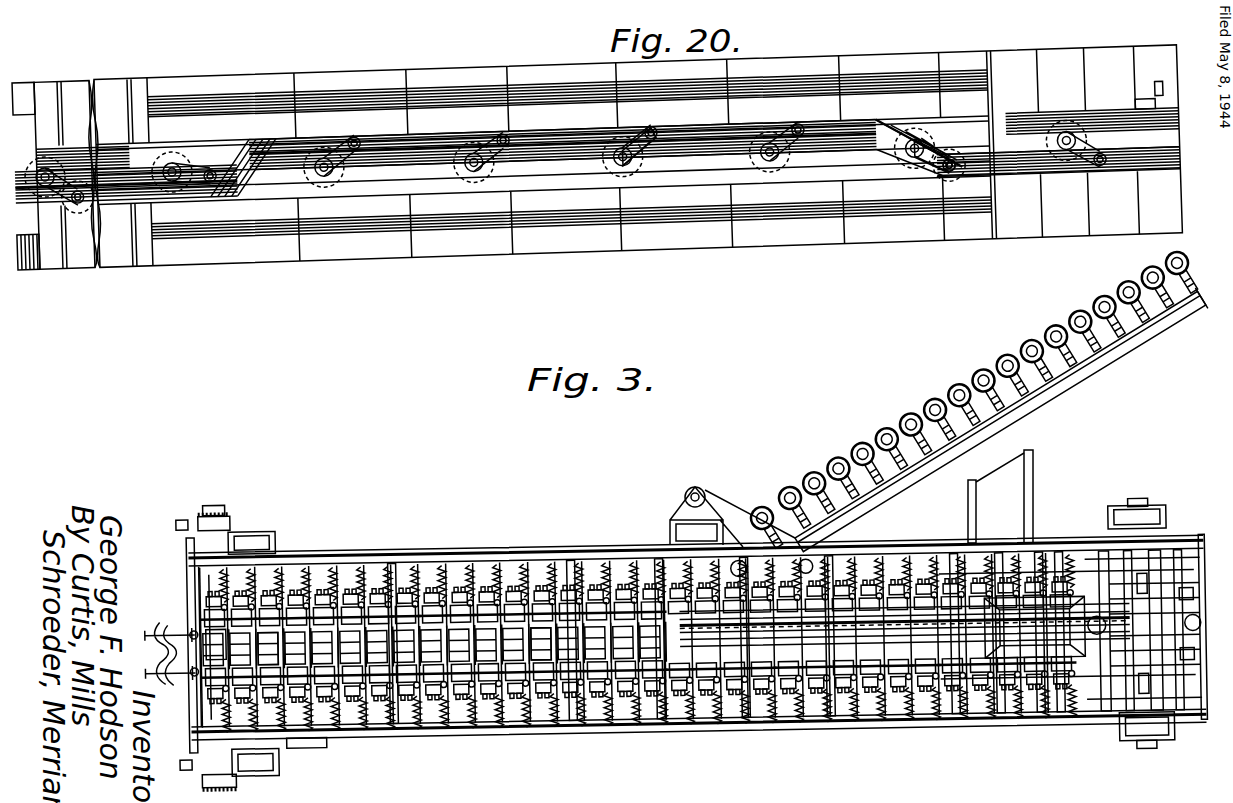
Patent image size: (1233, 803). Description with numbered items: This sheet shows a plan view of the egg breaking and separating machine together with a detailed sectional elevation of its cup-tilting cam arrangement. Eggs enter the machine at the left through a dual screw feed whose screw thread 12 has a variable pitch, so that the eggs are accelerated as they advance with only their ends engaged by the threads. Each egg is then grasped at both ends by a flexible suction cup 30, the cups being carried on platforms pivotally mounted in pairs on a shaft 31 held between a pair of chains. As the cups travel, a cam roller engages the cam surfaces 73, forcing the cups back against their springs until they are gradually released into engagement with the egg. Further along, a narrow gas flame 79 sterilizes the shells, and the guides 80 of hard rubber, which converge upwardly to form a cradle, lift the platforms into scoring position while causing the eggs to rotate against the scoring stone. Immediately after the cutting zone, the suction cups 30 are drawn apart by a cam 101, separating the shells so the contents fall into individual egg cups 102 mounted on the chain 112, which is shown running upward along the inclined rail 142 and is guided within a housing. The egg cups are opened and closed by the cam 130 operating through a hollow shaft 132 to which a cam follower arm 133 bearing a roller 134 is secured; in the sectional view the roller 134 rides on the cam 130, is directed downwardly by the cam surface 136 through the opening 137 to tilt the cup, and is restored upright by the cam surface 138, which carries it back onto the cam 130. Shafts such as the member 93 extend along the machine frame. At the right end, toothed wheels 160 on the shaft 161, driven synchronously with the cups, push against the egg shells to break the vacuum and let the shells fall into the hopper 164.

In FIG. 20, the cam surface 138 is at (146, 162).
In FIG. 20, the cam follower arm 133 is at (783, 138).
In FIG. 20, the roller 134 is at (819, 142).
In FIG. 20, the opening 137 is at (919, 137).
In FIG. 20, the cam surface 136 is at (1016, 174).
In FIG. 20, the hollow shaft 132 is at (946, 175).
In FIG. 20, the cam 130 is at (1088, 123).
In FIG. 20, the guide rail 142 is at (572, 232).
In FIG. 3, the guide rail 142 is at (1000, 421).
In FIG. 3, the guides 80 is at (975, 400).
In FIG. 3, the egg cups 102 is at (1001, 360).
In FIG. 3, the chain 112 is at (776, 517).
In FIG. 3, the screw thread 12 is at (170, 640).
In FIG. 3, the flexible suction cup 30 is at (252, 644).
In FIG. 3, the shaft 31 is at (259, 648).
In FIG. 3, the gas flame 79 is at (544, 643).
In FIG. 3, the cam surface 73 is at (307, 747).
In FIG. 3, the drive shaft 93 is at (904, 685).
In FIG. 3, the cam 101 is at (905, 690).
In FIG. 3, the wheels 160 is at (1034, 627).
In FIG. 3, the hopper 164 is at (970, 656).
In FIG. 3, the shaft 161 is at (1015, 659).